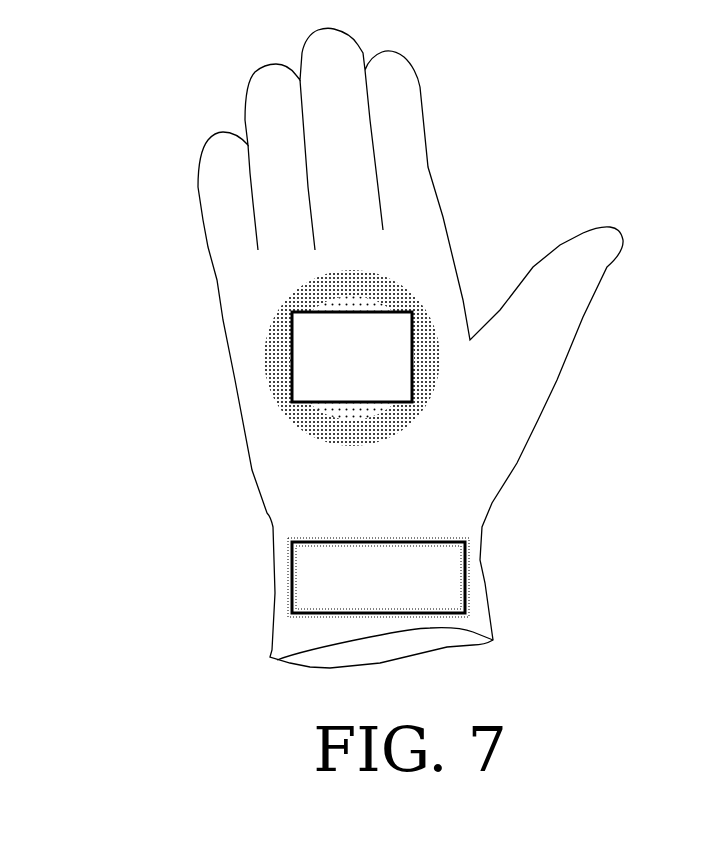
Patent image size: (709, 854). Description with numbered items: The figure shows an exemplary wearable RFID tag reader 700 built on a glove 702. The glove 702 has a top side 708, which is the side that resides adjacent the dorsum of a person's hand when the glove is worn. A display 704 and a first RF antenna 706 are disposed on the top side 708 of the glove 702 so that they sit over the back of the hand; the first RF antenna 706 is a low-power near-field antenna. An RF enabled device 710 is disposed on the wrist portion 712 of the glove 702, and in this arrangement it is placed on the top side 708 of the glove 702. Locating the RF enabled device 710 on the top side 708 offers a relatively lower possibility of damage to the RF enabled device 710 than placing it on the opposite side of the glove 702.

The wearable RFID tag reader 700 is at (388, 348).
The glove 702 is at (507, 400).
The display 704 is at (352, 357).
The first RF antenna 706 is at (295, 293).
The top side 708 is at (420, 253).
The RF enabled device 710 is at (378, 577).
The wrist portion 712 is at (277, 583).